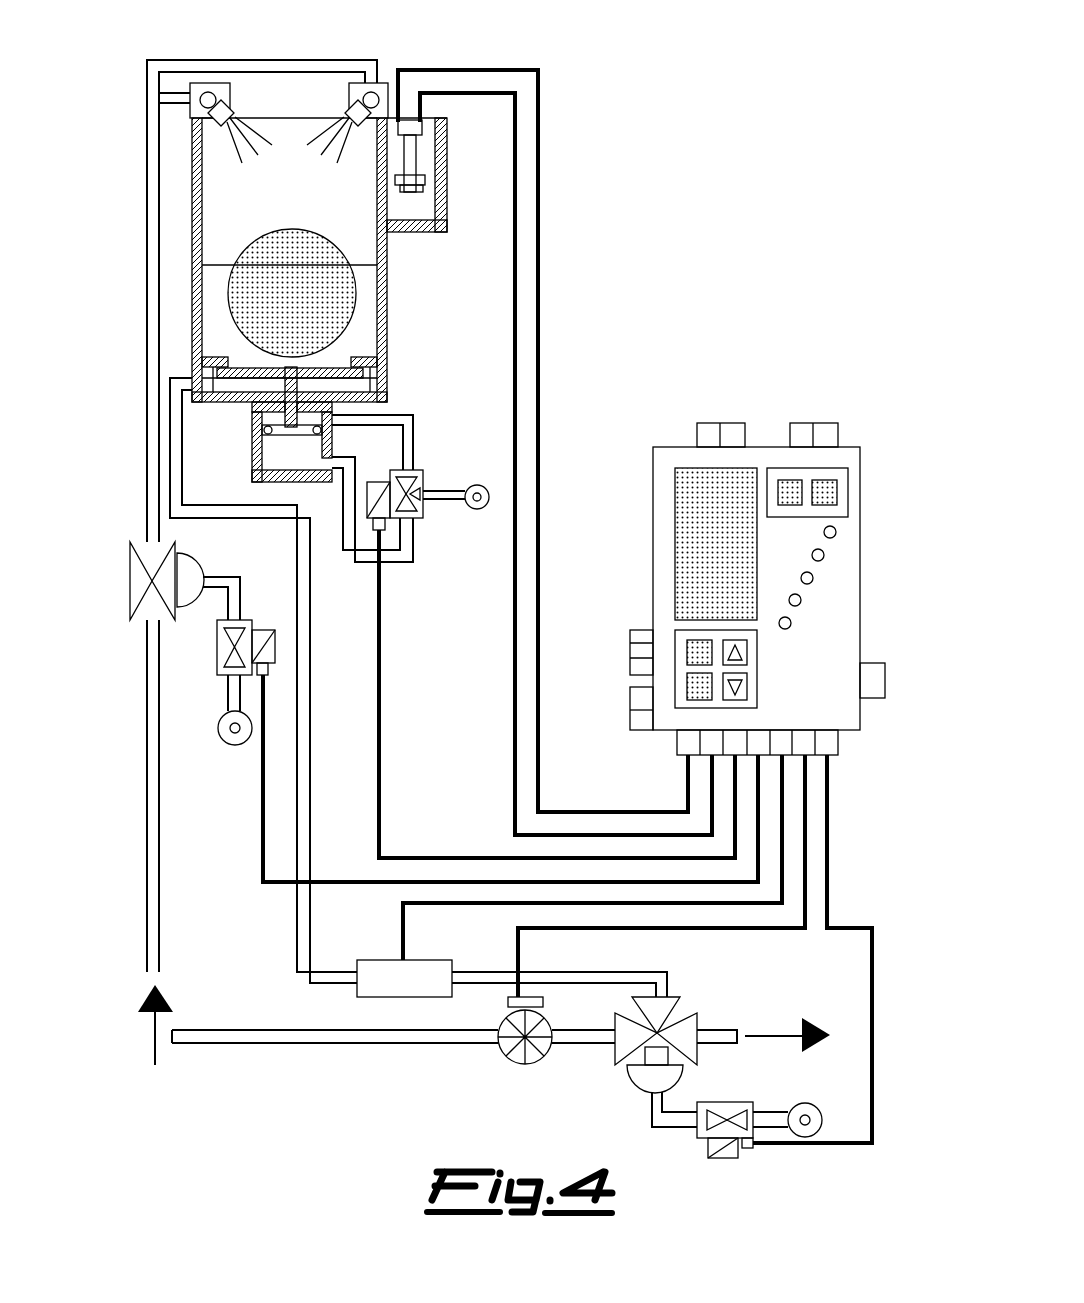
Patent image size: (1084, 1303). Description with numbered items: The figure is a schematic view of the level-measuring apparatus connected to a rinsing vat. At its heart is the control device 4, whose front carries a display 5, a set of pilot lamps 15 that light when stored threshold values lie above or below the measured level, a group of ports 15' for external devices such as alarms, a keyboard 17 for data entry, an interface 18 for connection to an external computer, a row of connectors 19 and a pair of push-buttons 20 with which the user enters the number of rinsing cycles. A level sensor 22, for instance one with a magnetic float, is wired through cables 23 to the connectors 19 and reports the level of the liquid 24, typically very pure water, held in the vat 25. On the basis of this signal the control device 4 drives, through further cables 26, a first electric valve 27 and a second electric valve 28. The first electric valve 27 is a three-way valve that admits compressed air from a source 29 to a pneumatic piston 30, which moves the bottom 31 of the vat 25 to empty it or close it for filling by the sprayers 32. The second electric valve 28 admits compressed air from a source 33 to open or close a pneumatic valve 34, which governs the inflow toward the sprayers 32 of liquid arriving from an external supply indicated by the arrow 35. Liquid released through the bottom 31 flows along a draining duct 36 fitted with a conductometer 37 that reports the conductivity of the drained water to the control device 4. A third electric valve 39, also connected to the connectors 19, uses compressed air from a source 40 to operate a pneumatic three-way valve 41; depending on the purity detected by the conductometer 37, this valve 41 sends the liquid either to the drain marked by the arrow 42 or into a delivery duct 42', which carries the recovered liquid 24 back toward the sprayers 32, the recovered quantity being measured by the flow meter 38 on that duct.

The control device 4 is at (852, 620).
The display 5 is at (688, 478).
The pilot lamps 15 is at (839, 577).
The ports 15' is at (614, 667).
The keyboard 17 is at (677, 703).
The interface 18 is at (875, 680).
The connectors 19 is at (688, 737).
The push-buttons 20 is at (845, 495).
The level sensor 22 is at (425, 175).
The cables 23 is at (540, 275).
The liquid 24 is at (363, 315).
The vat 25 is at (388, 342).
The cables 26 is at (478, 880).
The first electric valve 27 is at (417, 520).
The second electric valve 28 is at (248, 620).
The source 29 is at (437, 500).
The pneumatic piston 30 is at (257, 415).
The bottom 31 is at (388, 385).
The sprayers 32 is at (352, 80).
The source 33 is at (227, 700).
The pneumatic valve 34 is at (150, 603).
The arrow 35 is at (153, 1035).
The draining duct 36 is at (305, 910).
The conductometer 37 is at (403, 978).
The flow meter 38 is at (500, 1047).
The third electric valve 39 is at (732, 1103).
The source 40 is at (777, 1122).
The pneumatic three-way valve 41 is at (662, 1050).
The drain 42 is at (763, 1015).
The delivery duct 42' is at (335, 1064).